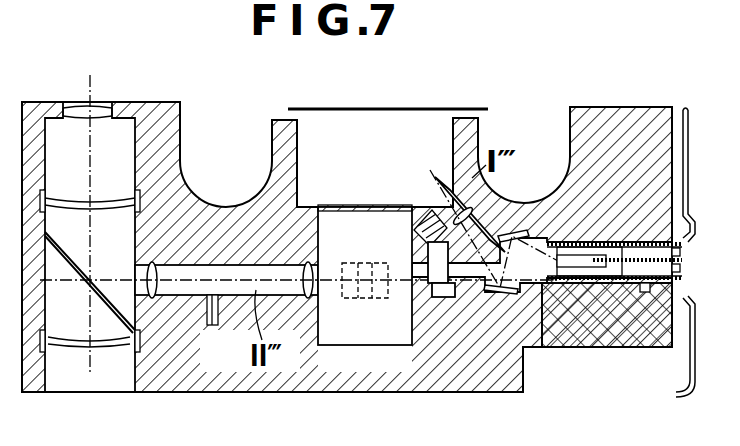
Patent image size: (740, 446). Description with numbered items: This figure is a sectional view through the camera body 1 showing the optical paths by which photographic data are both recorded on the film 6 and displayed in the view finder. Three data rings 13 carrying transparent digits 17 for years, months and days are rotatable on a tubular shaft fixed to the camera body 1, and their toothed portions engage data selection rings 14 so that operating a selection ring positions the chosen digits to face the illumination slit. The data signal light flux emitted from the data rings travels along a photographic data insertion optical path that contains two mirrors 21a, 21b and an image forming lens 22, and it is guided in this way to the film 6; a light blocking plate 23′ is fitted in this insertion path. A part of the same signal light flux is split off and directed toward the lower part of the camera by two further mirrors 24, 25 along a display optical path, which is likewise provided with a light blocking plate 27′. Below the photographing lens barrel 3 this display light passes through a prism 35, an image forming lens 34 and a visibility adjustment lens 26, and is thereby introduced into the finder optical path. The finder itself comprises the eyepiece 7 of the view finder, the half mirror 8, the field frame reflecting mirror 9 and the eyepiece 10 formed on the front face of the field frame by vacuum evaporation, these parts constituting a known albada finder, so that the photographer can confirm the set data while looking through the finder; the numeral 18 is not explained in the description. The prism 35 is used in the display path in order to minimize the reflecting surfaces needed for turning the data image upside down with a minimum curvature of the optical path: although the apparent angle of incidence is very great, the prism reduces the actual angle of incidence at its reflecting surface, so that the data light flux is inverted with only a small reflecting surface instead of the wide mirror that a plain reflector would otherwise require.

The camera body 1 is at (487, 392).
The lens barrel 3 is at (365, 328).
The film 6 is at (406, 109).
The eyepiece of a view finder 7 is at (70, 345).
The half mirror 8 is at (95, 268).
The field frame reflecting mirror 9 is at (72, 205).
The eyepiece attached to the front face of the field frame 10 is at (98, 110).
The data rings 13 is at (590, 250).
The data selection rings 14 is at (675, 249).
The transparent digits 17 is at (580, 347).
The optical axis 18 is at (96, 348).
The mirror 21a is at (527, 238).
The mirror 21b is at (503, 294).
The image forming lens 22 is at (498, 200).
The light blocking plate 23′ is at (452, 208).
The mirror 24 is at (414, 240).
The mirror 25 is at (445, 297).
The visibility adjustment lens 26 is at (153, 298).
The light blocking plate 27′ is at (218, 322).
The image forming lens 34 is at (305, 300).
The prism 35 is at (380, 296).